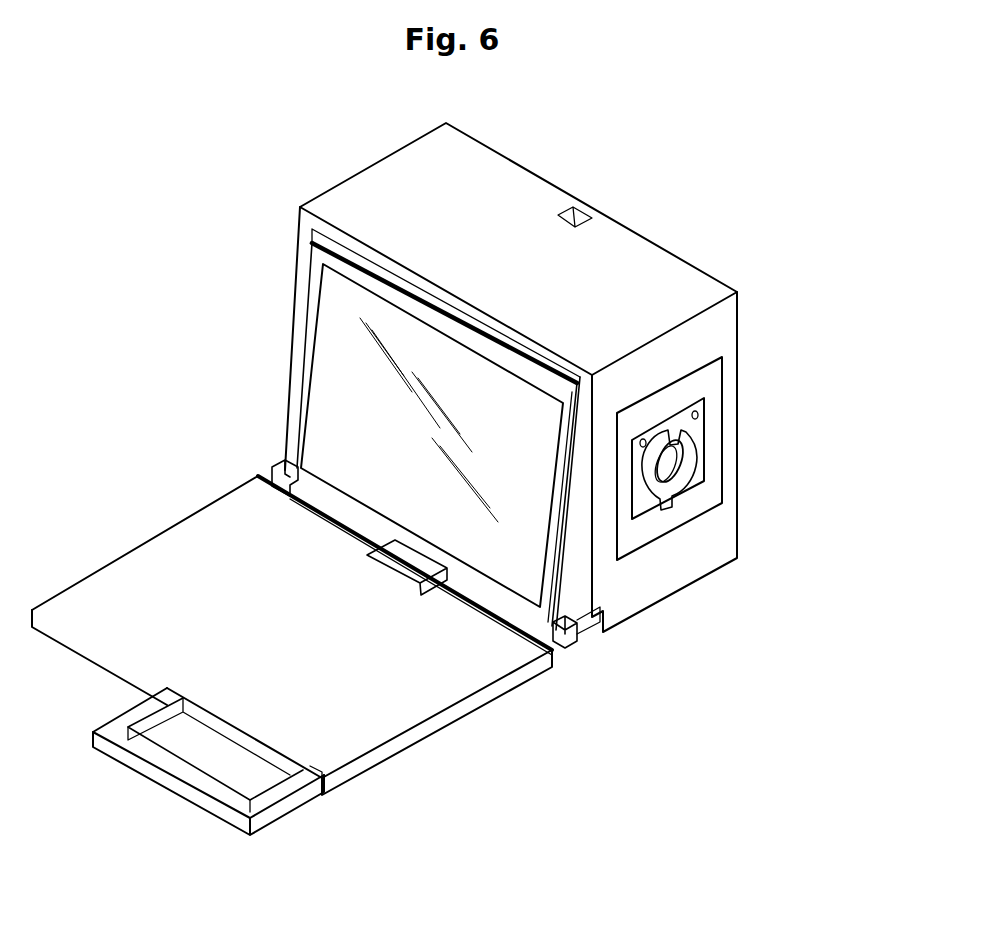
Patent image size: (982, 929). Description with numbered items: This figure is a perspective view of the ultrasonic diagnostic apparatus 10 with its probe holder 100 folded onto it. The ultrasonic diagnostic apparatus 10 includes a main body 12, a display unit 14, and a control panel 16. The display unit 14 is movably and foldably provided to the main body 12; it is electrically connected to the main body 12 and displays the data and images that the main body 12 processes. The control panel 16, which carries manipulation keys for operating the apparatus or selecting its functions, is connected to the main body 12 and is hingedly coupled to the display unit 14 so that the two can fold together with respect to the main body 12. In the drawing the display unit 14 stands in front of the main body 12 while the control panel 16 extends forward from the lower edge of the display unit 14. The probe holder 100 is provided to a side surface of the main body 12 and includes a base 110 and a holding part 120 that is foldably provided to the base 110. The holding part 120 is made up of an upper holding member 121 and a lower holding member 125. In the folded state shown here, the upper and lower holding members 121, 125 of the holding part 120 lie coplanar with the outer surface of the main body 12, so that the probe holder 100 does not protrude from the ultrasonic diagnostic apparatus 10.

The ultrasonic diagnostic apparatus 10 is at (648, 190).
The main body 12 is at (376, 190).
The display unit 14 is at (328, 362).
The control panel 16 is at (177, 556).
The probe holder 100 is at (725, 377).
The base 110 is at (646, 528).
The holding part 120 is at (702, 483).
The upper holding member 121 is at (700, 428).
The lower holding member 125 is at (686, 463).